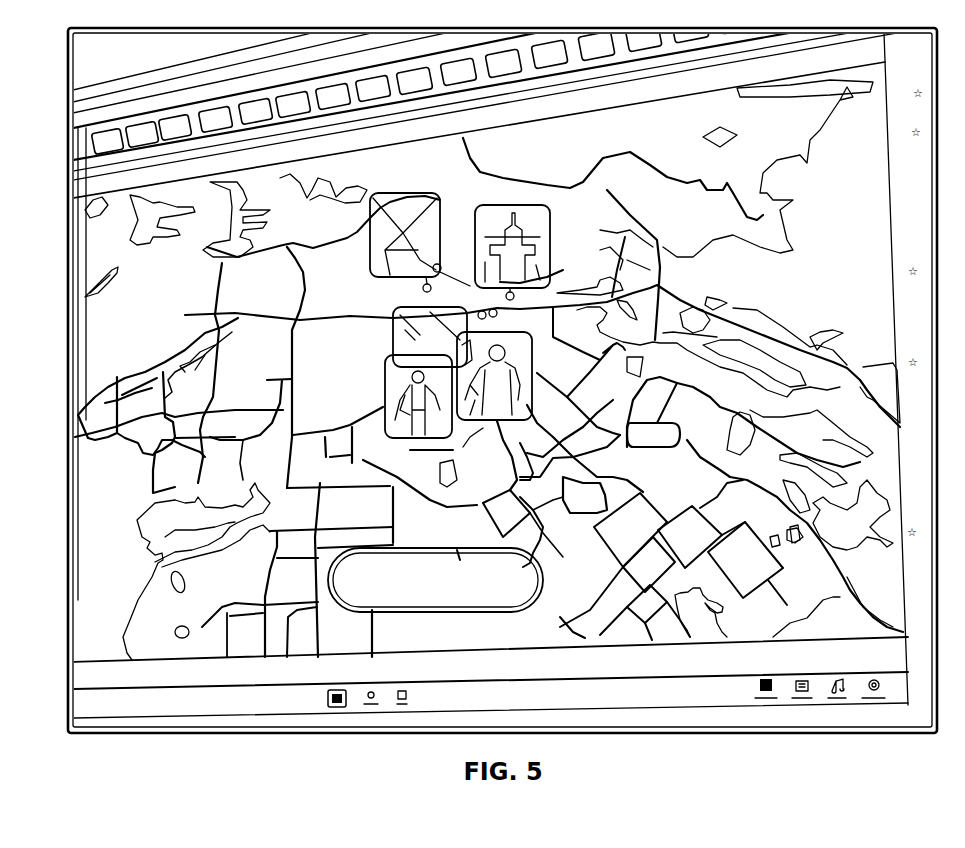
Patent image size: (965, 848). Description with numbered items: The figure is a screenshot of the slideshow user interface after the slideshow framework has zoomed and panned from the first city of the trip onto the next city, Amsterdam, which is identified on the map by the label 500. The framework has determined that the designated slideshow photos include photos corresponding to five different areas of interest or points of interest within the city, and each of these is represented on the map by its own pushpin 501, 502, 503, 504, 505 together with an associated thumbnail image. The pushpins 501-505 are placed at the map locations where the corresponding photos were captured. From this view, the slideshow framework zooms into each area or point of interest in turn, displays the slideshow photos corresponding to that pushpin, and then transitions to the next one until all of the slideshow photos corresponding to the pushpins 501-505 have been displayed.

The label 500 is at (540, 572).
The pushpin 501 is at (568, 225).
The pushpin 502 is at (532, 365).
The pushpin 503 is at (388, 382).
The pushpin 504 is at (423, 288).
The pushpin 505 is at (443, 262).